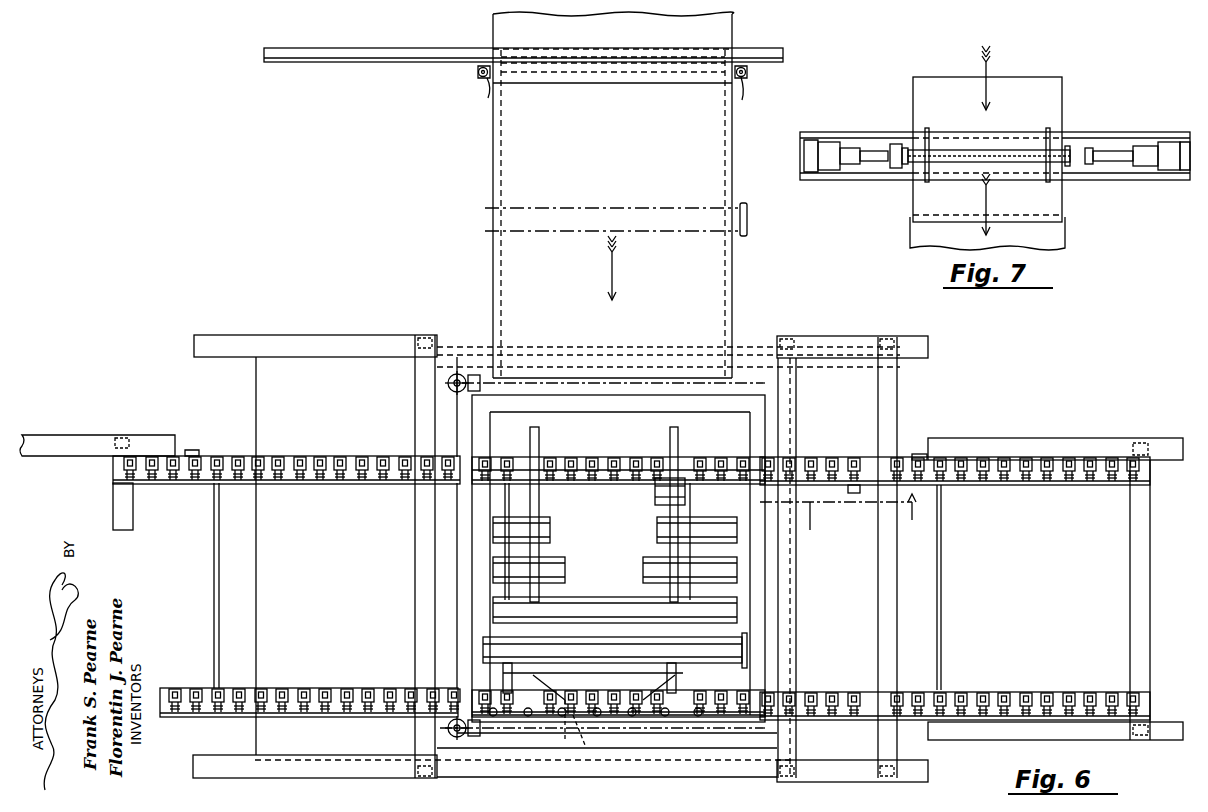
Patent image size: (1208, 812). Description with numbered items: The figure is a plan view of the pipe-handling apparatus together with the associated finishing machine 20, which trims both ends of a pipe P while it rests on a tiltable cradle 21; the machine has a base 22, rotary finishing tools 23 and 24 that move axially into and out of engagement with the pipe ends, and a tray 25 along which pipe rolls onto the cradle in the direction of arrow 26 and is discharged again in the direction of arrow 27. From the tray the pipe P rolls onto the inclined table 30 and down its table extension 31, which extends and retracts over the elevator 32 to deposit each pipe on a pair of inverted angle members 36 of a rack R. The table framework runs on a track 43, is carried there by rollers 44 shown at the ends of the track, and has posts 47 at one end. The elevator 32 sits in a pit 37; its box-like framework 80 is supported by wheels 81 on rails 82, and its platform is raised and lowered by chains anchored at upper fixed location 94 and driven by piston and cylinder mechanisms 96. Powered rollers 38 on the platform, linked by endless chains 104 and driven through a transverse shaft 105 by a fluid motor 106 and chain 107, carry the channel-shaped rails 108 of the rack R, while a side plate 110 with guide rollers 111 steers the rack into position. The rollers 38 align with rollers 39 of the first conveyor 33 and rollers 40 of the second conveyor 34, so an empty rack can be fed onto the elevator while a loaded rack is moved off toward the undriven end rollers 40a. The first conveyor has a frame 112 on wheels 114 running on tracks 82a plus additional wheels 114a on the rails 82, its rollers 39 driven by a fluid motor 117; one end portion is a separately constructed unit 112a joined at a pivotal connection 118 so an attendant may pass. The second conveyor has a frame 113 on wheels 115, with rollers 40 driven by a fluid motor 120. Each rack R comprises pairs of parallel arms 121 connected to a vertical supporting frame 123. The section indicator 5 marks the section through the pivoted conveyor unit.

In FIG. 7, the finishing machine 20 is at (900, 122).
In FIG. 7, the tiltable cradle 21 is at (952, 148).
In FIG. 7, the base 22 is at (1105, 134).
In FIG. 7, the rotary finishing tool 23 is at (896, 172).
In FIG. 7, the rotary finishing tool 24 is at (1092, 168).
In FIG. 7, the tray 25 is at (1062, 88).
In FIG. 7, the arrow 26 is at (990, 65).
In FIG. 7, the arrow 27 is at (990, 205).
In FIG. 6, the inclined table 30 is at (485, 258).
In FIG. 7, the inclined table 30 is at (1075, 240).
In FIG. 6, the table extension 31 is at (597, 392).
In FIG. 6, the elevator 32 is at (630, 730).
In FIG. 6, the first conveyor 33 is at (1040, 455).
In FIG. 6, the second conveyor 34 is at (240, 455).
In FIG. 6, the inverted angle members 36 is at (580, 610).
In FIG. 6, the pit 37 is at (258, 642).
In FIG. 6, the powered rollers 38 is at (580, 457).
In FIG. 6, the rollers 39 is at (832, 458).
In FIG. 6, the rollers 40 is at (360, 457).
In FIG. 6, the end rollers 40a is at (195, 457).
In FIG. 6, the track 43 is at (332, 50).
In FIG. 6, the roller 44 is at (476, 74).
In FIG. 6, the posts 47 is at (486, 92).
In FIG. 6, the elevator framework 80 is at (800, 600).
In FIG. 6, the wheels 81 is at (425, 338).
In FIG. 6, the tracks or rails 82 is at (290, 334).
In FIG. 6, the tracks 82a is at (70, 436).
In FIG. 6, the upper fixed location 94 is at (447, 385).
In FIG. 6, the piston and cylinder mechanisms 96 is at (470, 372).
In FIG. 6, the endless chains 104 is at (688, 483).
In FIG. 6, the transverse shaft 105 is at (512, 517).
In FIG. 6, the fluid motor 106 is at (525, 457).
In FIG. 6, the chain 107 is at (512, 490).
In FIG. 6, the channel-shaped rails 108 is at (665, 480).
In FIG. 6, the side plate 110 is at (560, 735).
In FIG. 6, the guide rollers 111 is at (583, 750).
In FIG. 6, the frame 112 is at (1128, 518).
In FIG. 6, the separately constructed unit 112a is at (823, 457).
In FIG. 6, the frame 113 is at (128, 512).
In FIG. 6, the wheels 114 is at (1142, 442).
In FIG. 6, the additional wheels 114a is at (886, 337).
In FIG. 6, the wheels 115 is at (122, 437).
In FIG. 6, the fluid motor 117 is at (915, 453).
In FIG. 6, the pivotal connection 118 is at (852, 495).
In FIG. 6, the fluid motor 120 is at (193, 450).
In FIG. 6, the parallel arms 121 is at (665, 548).
In FIG. 6, the supporting frame 123 is at (472, 645).
In FIG. 6, the section line 5 is at (860, 540).
In FIG. 6, the pipe P is at (610, 204).
In FIG. 7, the pipe P is at (1023, 107).
In FIG. 6, the rack R is at (482, 533).